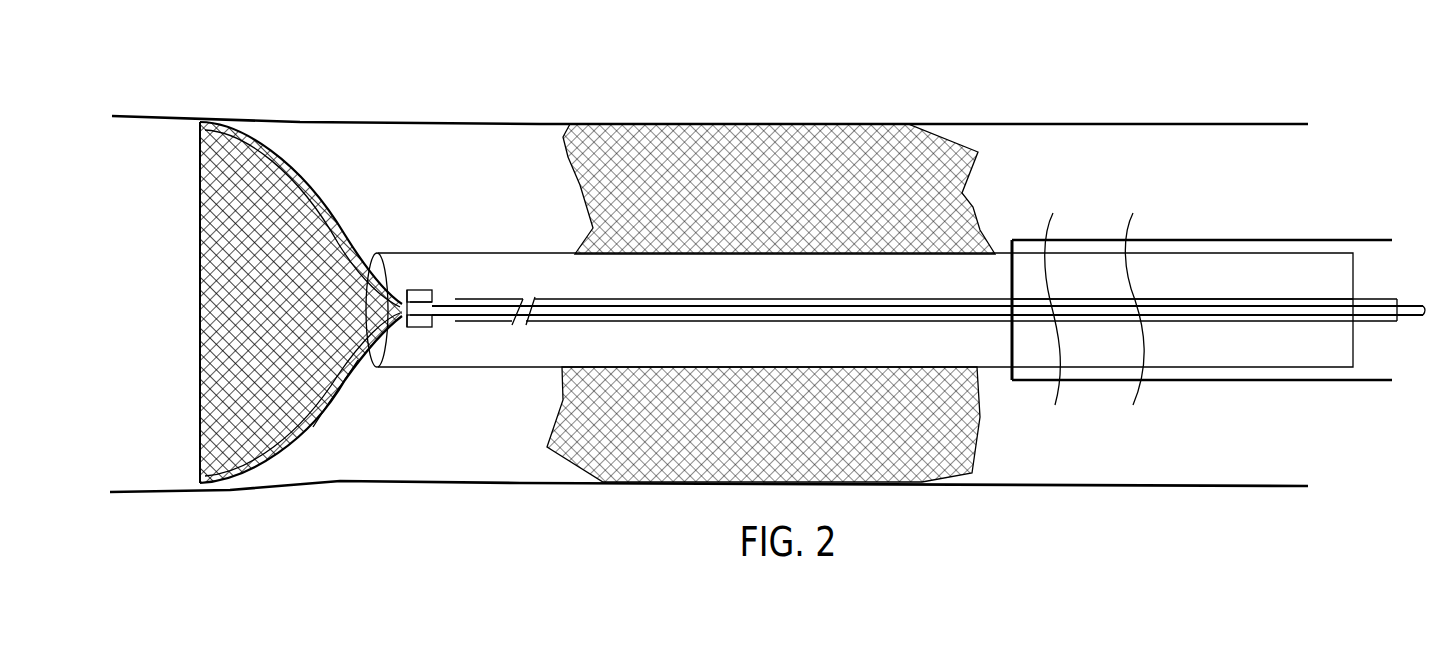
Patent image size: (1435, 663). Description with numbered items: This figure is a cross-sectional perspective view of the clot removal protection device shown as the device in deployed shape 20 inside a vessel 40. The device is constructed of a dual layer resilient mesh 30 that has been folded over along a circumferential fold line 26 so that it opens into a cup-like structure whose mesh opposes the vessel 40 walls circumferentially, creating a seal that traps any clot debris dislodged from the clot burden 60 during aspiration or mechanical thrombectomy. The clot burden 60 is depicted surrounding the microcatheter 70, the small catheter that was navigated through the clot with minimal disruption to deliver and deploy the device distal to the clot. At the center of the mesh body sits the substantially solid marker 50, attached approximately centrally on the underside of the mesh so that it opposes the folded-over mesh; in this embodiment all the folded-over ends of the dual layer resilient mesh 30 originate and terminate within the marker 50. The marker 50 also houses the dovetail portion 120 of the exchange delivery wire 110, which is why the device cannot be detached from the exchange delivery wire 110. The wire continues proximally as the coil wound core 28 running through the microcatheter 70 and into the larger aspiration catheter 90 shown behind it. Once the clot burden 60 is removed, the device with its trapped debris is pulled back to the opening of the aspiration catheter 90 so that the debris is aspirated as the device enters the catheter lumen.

The device in deployed shape 20 is at (297, 182).
The circumferential fold line 26 is at (200, 255).
The coil wound core of EDW 28 is at (477, 323).
The dual layer resilient mesh 30 is at (325, 418).
The vessel 40 is at (608, 125).
The marker 50 is at (415, 290).
The clot burden 60 is at (838, 175).
The microcatheter 70 is at (498, 253).
The aspiration catheter 90 is at (1163, 382).
The exchange delivery wire 110 is at (906, 290).
The dovetail portion of exchange delivery wire 120 is at (408, 313).